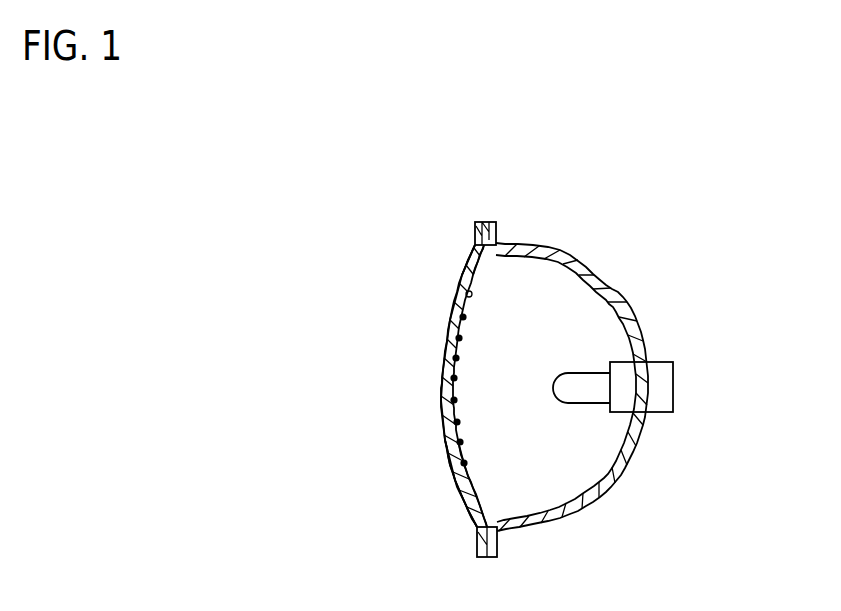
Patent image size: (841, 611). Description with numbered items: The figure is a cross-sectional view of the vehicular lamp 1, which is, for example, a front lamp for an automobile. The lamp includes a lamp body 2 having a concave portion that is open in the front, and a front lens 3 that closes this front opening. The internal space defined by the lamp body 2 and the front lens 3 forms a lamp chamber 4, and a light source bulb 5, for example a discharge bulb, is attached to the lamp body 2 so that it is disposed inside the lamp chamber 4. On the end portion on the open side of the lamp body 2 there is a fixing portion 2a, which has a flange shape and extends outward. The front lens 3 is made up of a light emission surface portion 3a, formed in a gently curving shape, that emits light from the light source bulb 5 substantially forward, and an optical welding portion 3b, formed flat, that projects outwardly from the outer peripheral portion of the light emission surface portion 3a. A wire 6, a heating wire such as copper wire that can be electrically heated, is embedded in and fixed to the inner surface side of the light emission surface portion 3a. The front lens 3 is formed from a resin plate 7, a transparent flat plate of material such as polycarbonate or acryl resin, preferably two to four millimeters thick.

The vehicular lamp 1 is at (690, 180).
The lamp body 2 is at (633, 312).
The fixing portion 2a is at (497, 232).
The front lens 3 is at (443, 368).
The light emission surface portion 3a is at (445, 446).
The optical welding portion 3b is at (477, 226).
The lamp chamber 4 is at (537, 465).
The light source bulb 5 is at (585, 398).
The wire 6 is at (463, 318).
The resin plate 7 is at (443, 368).